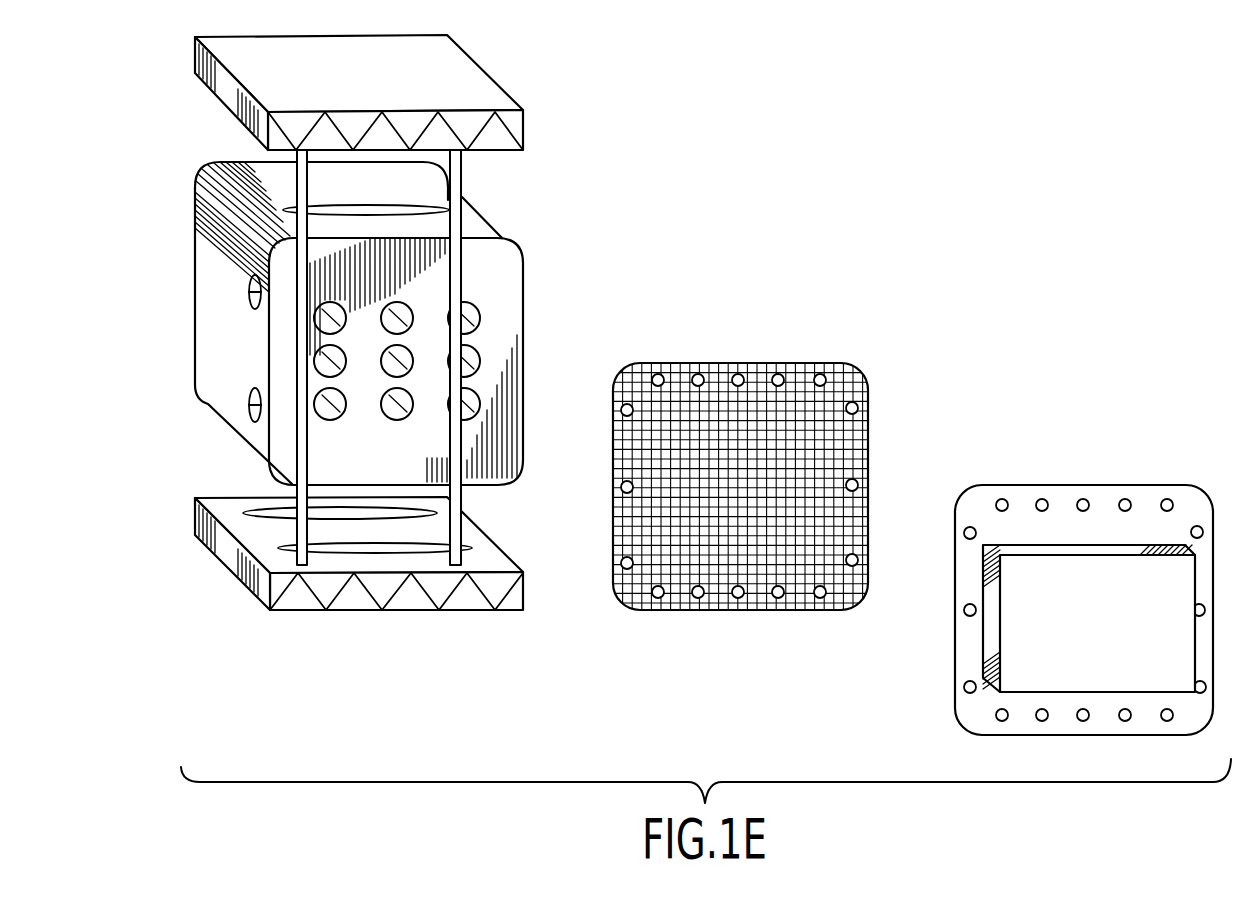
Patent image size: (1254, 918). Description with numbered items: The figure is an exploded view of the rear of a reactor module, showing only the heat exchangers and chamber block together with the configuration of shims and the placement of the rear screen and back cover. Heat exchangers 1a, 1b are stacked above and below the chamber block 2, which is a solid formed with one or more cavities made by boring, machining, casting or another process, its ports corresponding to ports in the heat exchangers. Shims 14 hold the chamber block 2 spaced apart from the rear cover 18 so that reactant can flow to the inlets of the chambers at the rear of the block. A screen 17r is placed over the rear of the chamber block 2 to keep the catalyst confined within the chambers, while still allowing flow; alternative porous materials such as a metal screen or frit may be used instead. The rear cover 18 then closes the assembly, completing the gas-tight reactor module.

The heat exchanger 1a is at (197, 60).
The heat exchanger 1b is at (198, 522).
The chamber block 2 is at (206, 304).
The shim 14 is at (454, 447).
The rear screen 17r is at (755, 368).
The rear cover 18 is at (1098, 493).